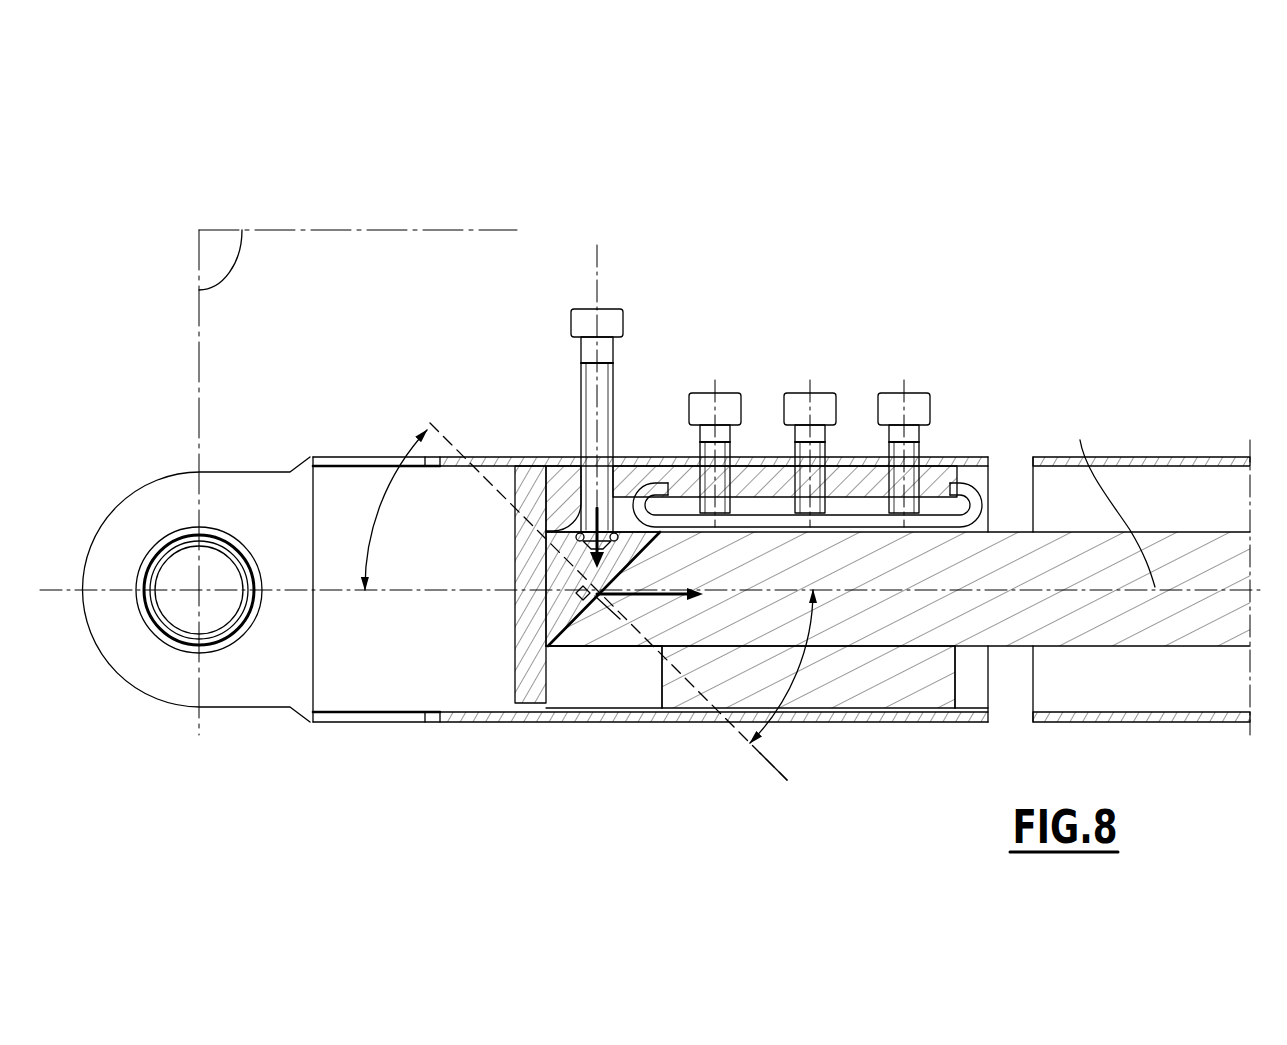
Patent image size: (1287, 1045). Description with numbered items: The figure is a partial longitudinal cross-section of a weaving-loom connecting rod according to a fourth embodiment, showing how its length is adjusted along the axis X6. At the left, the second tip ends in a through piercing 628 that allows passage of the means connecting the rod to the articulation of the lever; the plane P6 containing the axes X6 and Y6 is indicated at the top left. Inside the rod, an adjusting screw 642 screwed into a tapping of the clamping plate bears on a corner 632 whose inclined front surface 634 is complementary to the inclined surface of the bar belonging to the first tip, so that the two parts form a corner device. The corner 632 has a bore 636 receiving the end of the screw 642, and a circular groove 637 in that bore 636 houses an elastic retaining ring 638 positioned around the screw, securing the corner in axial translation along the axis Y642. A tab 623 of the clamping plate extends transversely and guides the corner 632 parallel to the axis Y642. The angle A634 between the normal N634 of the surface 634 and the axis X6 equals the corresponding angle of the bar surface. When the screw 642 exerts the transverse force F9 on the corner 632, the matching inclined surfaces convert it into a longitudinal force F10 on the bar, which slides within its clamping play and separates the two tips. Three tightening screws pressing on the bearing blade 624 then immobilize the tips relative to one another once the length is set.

The through piercing 628 is at (185, 568).
The plane P6 is at (358, 482).
The tab 623 is at (527, 670).
The corner 632 is at (562, 602).
The elastic retaining ring 638 is at (640, 532).
The axis X6 is at (1112, 496).
The bearing blade 624 is at (927, 520).
The adjusting screw 642 is at (610, 323).
The axis of the adjusting screw Y642 is at (591, 360).
The circular groove 637 is at (567, 527).
The transverse force F9 is at (585, 545).
The longitudinal force F10 is at (670, 585).
The front surface of the corner 634 is at (588, 618).
The bore 636 is at (617, 563).
The normal of the corner surface N634 is at (798, 779).
The angle A634 is at (782, 666).